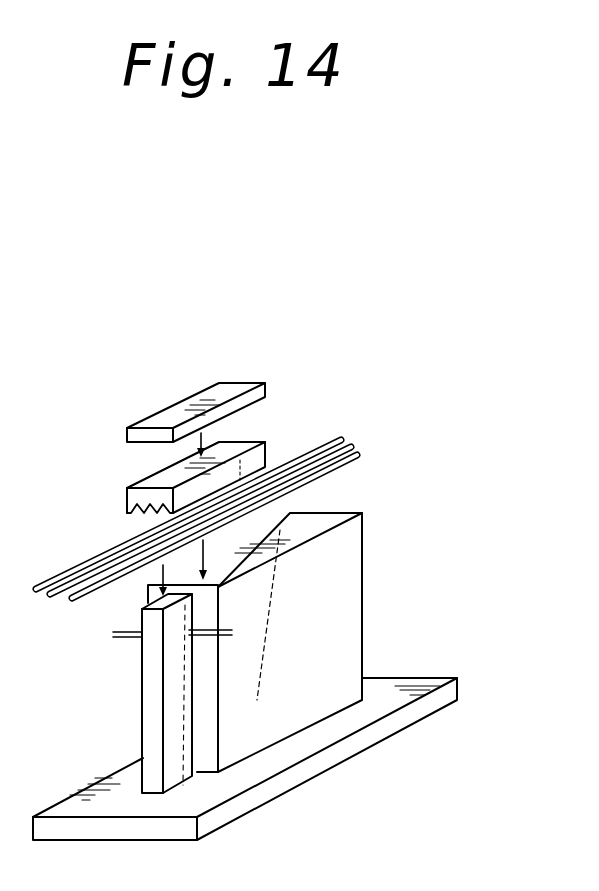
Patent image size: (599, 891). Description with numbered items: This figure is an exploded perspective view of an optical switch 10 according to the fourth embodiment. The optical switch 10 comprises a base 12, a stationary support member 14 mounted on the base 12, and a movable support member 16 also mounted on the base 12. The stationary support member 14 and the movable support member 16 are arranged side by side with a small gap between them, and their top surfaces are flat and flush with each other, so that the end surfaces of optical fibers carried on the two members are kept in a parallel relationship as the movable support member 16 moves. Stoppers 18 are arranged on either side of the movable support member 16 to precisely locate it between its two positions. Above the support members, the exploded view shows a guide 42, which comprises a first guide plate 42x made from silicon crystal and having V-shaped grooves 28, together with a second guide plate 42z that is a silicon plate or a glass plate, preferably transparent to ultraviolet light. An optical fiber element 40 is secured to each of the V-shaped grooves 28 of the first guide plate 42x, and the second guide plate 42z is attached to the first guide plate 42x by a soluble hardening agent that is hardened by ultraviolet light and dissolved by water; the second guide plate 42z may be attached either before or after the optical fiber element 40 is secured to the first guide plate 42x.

The optical switch 10 is at (398, 413).
The base 12 is at (353, 747).
The stationary support member 14 is at (347, 567).
The movable support member 16 is at (152, 700).
The stoppers 18 is at (124, 633).
The V-shaped grooves 28 is at (128, 512).
The optical fiber element 40 is at (352, 460).
The guide 42 is at (199, 421).
The first guide plate 42x is at (267, 445).
The second guide plate 42z is at (243, 388).